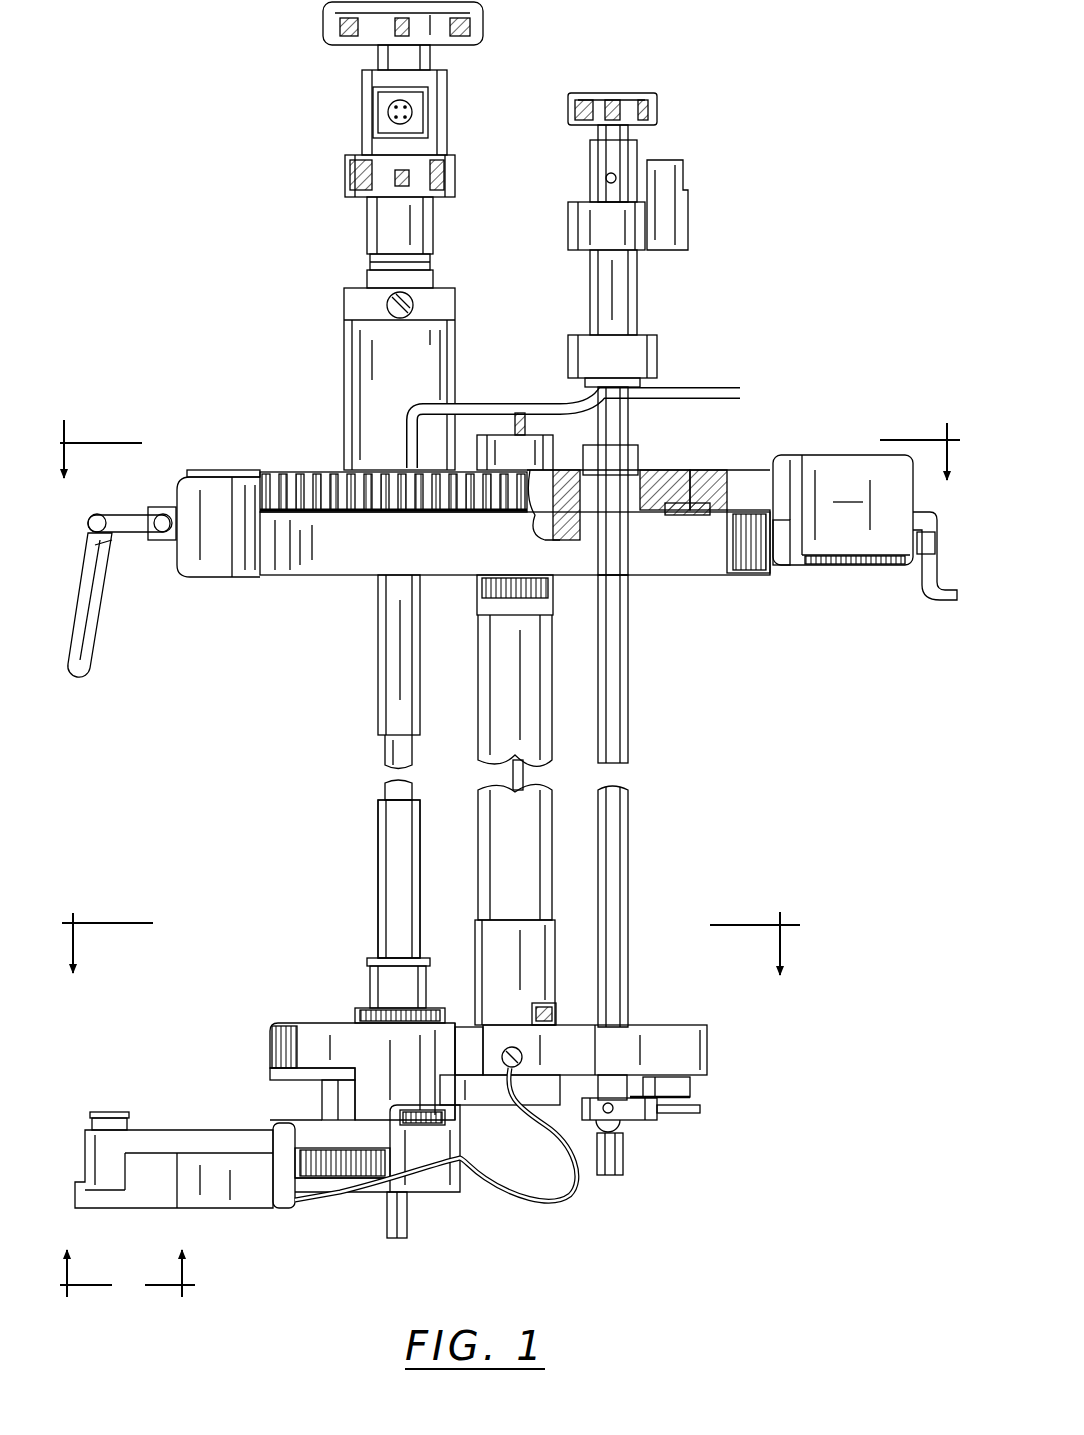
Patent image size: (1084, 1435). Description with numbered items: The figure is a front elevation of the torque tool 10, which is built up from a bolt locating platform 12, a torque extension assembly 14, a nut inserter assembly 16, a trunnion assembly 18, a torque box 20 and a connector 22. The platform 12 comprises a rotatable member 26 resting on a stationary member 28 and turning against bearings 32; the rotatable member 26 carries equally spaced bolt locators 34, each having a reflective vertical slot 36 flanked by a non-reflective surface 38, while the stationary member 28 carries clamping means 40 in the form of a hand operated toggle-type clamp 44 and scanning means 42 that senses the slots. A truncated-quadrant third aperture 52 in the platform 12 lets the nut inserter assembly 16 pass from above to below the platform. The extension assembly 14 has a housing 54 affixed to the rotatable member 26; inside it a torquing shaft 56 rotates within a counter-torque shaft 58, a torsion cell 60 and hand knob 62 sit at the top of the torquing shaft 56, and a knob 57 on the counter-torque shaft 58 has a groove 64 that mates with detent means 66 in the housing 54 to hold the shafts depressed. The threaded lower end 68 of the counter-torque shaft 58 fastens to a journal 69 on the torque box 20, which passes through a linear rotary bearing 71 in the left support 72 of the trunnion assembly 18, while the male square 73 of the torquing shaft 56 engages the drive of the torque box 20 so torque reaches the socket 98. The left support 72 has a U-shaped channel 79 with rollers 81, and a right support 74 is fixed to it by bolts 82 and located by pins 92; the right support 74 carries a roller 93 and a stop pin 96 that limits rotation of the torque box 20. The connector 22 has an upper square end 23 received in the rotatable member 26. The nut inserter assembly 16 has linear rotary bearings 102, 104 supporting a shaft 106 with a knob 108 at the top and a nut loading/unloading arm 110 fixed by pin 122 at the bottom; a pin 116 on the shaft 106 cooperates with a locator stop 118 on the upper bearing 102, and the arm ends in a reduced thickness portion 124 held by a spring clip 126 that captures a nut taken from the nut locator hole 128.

The torque tool 10 is at (738, 50).
The bolt locating platform 12 is at (233, 468).
The torque extension assembly 14 is at (342, 353).
The nut inserter assembly 16 is at (657, 332).
The trunnion assembly 18 is at (280, 1022).
The torque box 20 is at (202, 1128).
The connector 22 is at (477, 665).
The upper square end 23 is at (477, 608).
The rotatable member 26 is at (720, 470).
The stationary member 28 is at (740, 575).
The bearings 32 is at (700, 516).
The bolt locators 34 is at (335, 480).
The vertical slot 36 is at (440, 513).
The non-reflective surface 38 is at (370, 513).
The clamping means 40 is at (220, 578).
The scanning means 42 is at (865, 527).
The toggle-type clamp 44 is at (115, 512).
The third aperture 52 is at (650, 470).
The housing 54 is at (455, 355).
The torquing shaft 56 is at (385, 750).
The knob 57 is at (367, 222).
The counter-torque shaft 58 is at (378, 715).
The torsion cell 60 is at (447, 112).
The hand knob 62 is at (468, 35).
The groove 64 is at (370, 263).
The detent means 66 is at (413, 305).
The lower end 68 is at (378, 930).
The journal 69 is at (372, 976).
The linear rotary bearing 71 is at (357, 1012).
The left support 72 is at (270, 1045).
The male square 73 is at (407, 1215).
The right support 74 is at (690, 1026).
The U-shaped channel 79 is at (282, 1078).
The rollers 81 is at (322, 1100).
The bolts 82 is at (545, 1005).
The pins 92 is at (510, 1068).
The roller 93 is at (690, 1087).
The stop pin 96 is at (620, 1176).
The socket 98 is at (110, 1112).
The upper linear rotary bearing 102 is at (570, 250).
The lower linear rotary bearing 104 is at (657, 355).
The shaft 106 is at (629, 632).
The knob 108 is at (660, 105).
The nut loading/unloading arm 110 is at (650, 1121).
The pin 116 is at (606, 178).
The locator stop 118 is at (686, 176).
The pin 122 is at (614, 1140).
The reduced thickness portion 124 is at (700, 1110).
The spring clip 126 is at (690, 1097).
The nut locator hole 128 is at (705, 470).